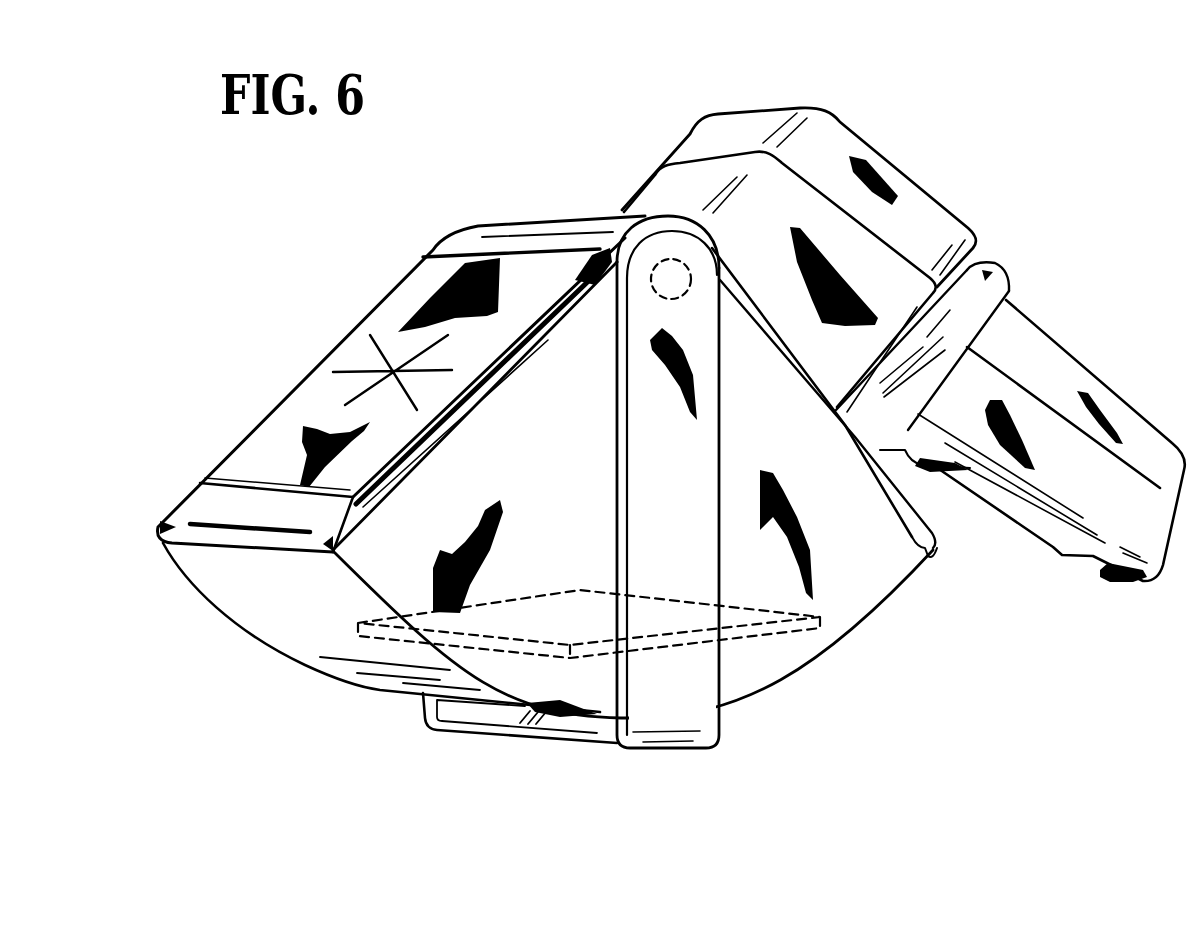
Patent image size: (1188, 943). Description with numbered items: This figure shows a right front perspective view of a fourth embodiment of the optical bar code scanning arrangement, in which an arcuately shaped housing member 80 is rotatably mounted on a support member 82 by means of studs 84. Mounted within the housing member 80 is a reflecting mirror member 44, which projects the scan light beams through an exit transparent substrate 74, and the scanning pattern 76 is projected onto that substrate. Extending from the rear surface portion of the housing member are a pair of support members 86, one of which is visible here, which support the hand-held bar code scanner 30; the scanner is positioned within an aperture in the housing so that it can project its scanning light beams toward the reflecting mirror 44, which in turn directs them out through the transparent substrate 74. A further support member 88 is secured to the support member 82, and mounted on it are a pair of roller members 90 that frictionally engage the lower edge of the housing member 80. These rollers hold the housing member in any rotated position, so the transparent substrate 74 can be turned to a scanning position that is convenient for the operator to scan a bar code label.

The hand-held bar code scanner 30 is at (866, 148).
The reflecting mirror member 44 is at (743, 639).
The exit transparent substrate 74 is at (257, 428).
The scanning pattern 76 is at (366, 349).
The housing member 80 is at (833, 650).
The support member 82 is at (570, 740).
The studs 84 is at (648, 266).
The support members 86 is at (997, 275).
The support member 88 is at (597, 733).
The roller members 90 is at (540, 726).